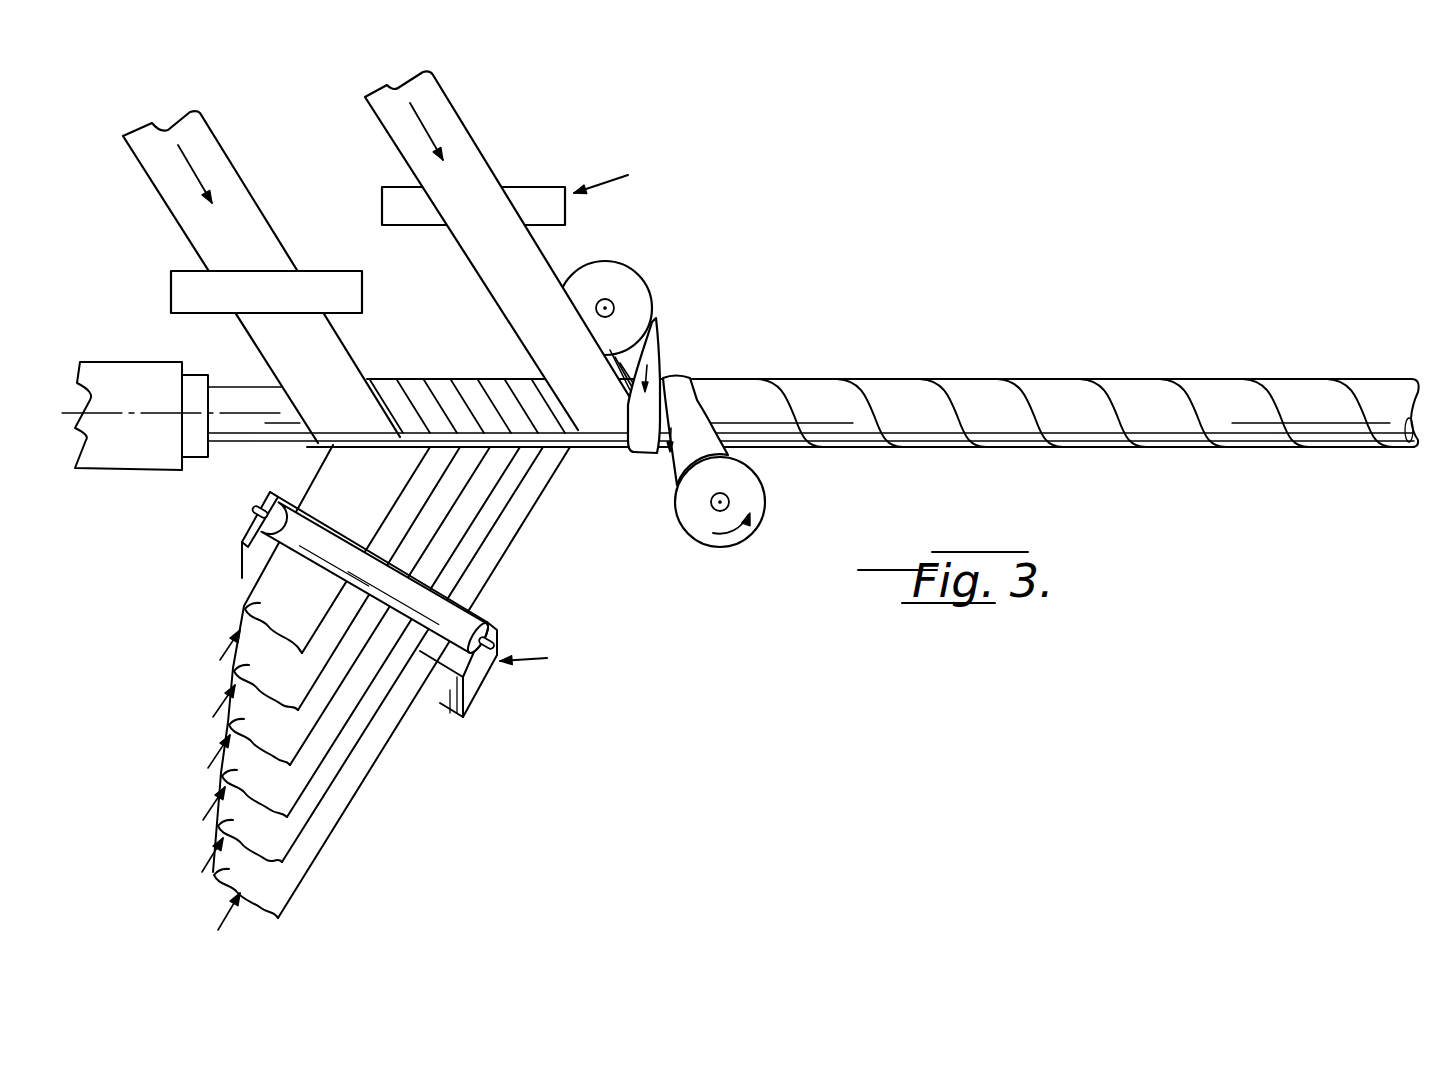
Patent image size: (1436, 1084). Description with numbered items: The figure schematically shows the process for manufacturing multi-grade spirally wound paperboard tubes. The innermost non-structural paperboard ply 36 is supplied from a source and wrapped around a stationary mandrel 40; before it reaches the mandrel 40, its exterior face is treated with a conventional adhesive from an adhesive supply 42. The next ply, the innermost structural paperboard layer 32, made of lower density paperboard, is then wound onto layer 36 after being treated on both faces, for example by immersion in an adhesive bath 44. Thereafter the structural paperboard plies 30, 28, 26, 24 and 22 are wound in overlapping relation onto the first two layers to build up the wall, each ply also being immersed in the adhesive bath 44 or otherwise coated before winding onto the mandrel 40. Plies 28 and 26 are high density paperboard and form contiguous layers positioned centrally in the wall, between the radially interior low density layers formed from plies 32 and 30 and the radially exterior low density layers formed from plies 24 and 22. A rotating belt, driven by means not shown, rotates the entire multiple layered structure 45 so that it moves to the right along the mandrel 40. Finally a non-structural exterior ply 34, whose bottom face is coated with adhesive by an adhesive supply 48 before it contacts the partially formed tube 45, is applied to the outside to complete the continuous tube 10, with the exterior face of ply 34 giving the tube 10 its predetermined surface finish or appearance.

The tube 10 is at (1047, 368).
The paperboard ply 22 is at (277, 888).
The paperboard ply 24 is at (283, 828).
The paperboard ply 26 is at (233, 772).
The paperboard ply 28 is at (237, 720).
The paperboard ply 30 is at (240, 658).
The paperboard ply 32 is at (250, 608).
The exterior layer 34 is at (455, 127).
The interior layer 36 is at (205, 148).
The mandrel 40 is at (262, 425).
The adhesive supply 42 is at (330, 270).
The adhesive bath 44 is at (495, 624).
The multiple layered structure 45 is at (492, 385).
The adhesive supply 48 is at (545, 188).